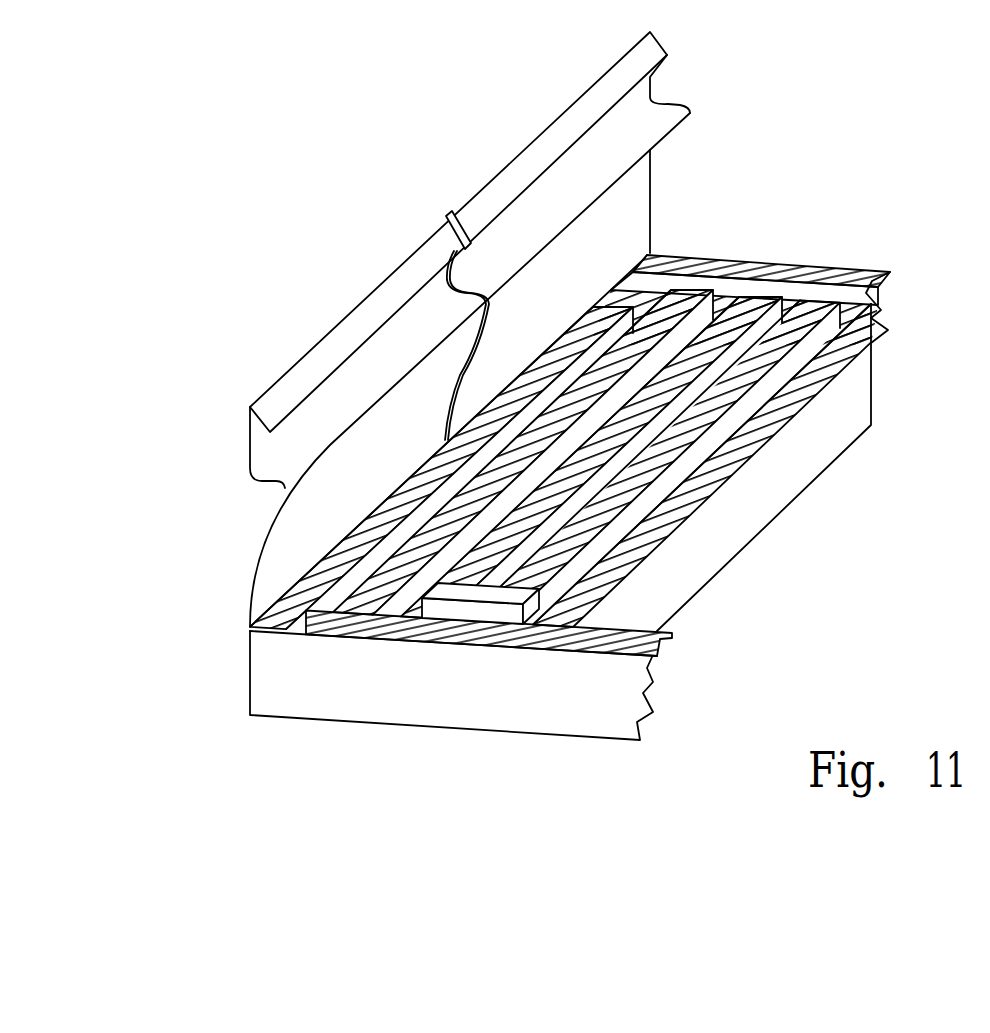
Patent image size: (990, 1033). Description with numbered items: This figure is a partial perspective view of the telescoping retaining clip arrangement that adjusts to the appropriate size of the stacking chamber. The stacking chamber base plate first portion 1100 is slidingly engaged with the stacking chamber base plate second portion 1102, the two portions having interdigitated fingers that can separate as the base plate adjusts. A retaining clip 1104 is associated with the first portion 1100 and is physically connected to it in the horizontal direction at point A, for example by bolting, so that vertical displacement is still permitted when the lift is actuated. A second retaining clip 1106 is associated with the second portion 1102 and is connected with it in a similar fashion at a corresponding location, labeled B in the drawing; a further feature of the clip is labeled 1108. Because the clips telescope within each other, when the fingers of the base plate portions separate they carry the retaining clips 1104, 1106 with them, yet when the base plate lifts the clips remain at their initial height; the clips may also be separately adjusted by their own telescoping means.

The stacking chamber base plate first portion 1100 is at (333, 683).
The stacking chamber base plate second portion 1102 is at (820, 267).
The retaining clip 1104 is at (297, 533).
The retaining clip 1106 is at (653, 160).
The conductor lead 1108 is at (448, 210).
The point A is at (252, 622).
The point B (back-left corner) B is at (668, 258).